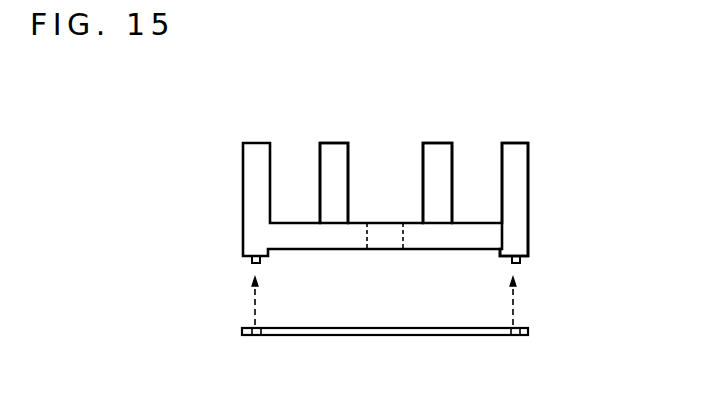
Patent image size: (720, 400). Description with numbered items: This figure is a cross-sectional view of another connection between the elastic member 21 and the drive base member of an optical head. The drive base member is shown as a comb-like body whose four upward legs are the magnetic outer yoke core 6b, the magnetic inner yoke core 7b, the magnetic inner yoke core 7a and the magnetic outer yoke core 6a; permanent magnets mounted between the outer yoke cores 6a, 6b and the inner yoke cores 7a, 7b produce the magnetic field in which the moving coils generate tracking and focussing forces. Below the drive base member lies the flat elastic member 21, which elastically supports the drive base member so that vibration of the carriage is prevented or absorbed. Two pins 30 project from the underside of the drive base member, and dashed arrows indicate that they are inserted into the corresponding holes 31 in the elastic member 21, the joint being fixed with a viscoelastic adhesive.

The magnetic outer yoke core 6b is at (259, 150).
The magnetic inner yoke core 7b is at (338, 150).
The magnetic inner yoke core 7a is at (439, 150).
The magnetic outer yoke core 6a is at (517, 150).
The pin 30 is at (252, 260).
The elastic member 21 is at (398, 328).
The hole 31 is at (258, 336).